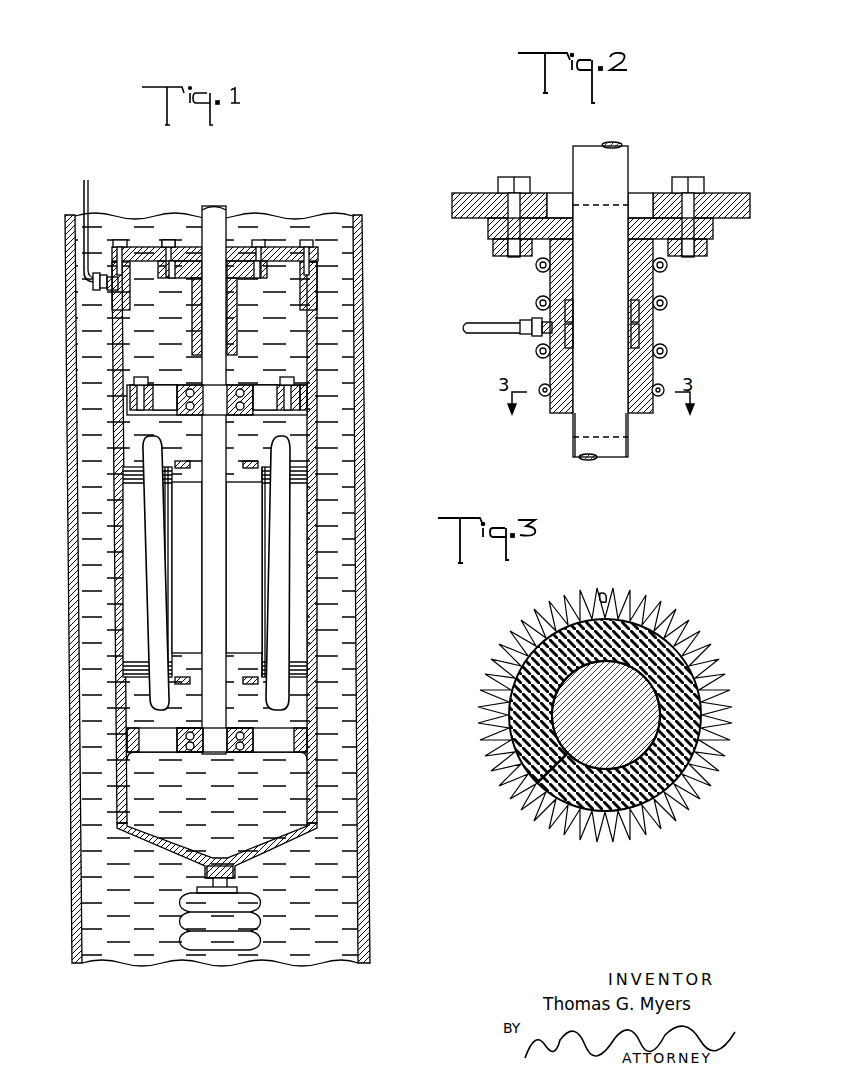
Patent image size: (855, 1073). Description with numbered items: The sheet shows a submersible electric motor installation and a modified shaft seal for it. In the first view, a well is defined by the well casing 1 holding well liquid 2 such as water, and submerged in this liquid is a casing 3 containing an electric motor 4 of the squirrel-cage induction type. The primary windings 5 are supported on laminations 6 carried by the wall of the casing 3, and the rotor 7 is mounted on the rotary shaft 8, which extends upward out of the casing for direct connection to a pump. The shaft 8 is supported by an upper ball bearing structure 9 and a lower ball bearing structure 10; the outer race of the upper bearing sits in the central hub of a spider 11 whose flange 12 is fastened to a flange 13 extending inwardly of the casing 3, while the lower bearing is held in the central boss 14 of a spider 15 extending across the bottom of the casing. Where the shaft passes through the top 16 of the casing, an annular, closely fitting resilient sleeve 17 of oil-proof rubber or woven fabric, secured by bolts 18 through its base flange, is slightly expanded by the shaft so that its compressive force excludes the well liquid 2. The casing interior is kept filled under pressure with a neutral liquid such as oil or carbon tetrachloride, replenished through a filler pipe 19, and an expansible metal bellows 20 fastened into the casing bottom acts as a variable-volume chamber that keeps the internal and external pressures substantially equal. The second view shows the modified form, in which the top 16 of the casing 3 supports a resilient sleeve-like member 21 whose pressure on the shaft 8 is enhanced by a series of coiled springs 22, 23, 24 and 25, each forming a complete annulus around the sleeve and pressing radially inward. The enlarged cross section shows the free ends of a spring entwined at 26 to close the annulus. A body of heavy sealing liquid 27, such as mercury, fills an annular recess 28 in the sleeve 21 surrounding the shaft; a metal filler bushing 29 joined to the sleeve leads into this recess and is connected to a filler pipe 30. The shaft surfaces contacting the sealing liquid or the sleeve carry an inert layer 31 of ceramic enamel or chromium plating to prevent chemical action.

In FIG. 1, the well casing 1 is at (359, 321).
In FIG. 1, the well liquid 2 is at (338, 301).
In FIG. 1, the casing 3 is at (305, 414).
In FIG. 1, the electric motor 4 is at (292, 492).
In FIG. 1, the primary windings 5 is at (285, 543).
In FIG. 1, the laminations 6 is at (300, 586).
In FIG. 1, the rotor 7 is at (180, 575).
In FIG. 1, the rotary shaft 8 is at (211, 608).
In FIG. 2, the rotary shaft 8 is at (625, 148).
In FIG. 3, the rotary shaft 8 is at (555, 750).
In FIG. 1, the upper ball bearing structure 9 is at (240, 385).
In FIG. 1, the lower ball bearing structure 10 is at (235, 752).
In FIG. 1, the spider 11 is at (171, 385).
In FIG. 1, the flange 12 is at (294, 385).
In FIG. 1, the flange 13 is at (312, 400).
In FIG. 1, the central boss 14 is at (183, 752).
In FIG. 1, the spider 15 is at (290, 750).
In FIG. 1, the top 16 is at (297, 247).
In FIG. 2, the top 16 is at (728, 193).
In FIG. 1, the sleeve 17 is at (238, 313).
In FIG. 1, the bolts 18 is at (169, 240).
In FIG. 1, the filler pipe 19 is at (88, 184).
In FIG. 1, the expansible metal bellows 20 is at (238, 950).
In FIG. 2, the resilient sleeve-like member 21 is at (650, 413).
In FIG. 3, the resilient sleeve-like member 21 is at (690, 675).
In FIG. 2, the coiled spring 22 is at (667, 268).
In FIG. 2, the coiled spring 23 is at (667, 306).
In FIG. 2, the coiled spring 24 is at (667, 352).
In FIG. 2, the coiled spring 25 is at (660, 398).
In FIG. 3, the coiled spring 25 is at (668, 612).
In FIG. 3, the entwined spring ends 26 is at (600, 592).
In FIG. 2, the sealing liquid 27 is at (640, 337).
In FIG. 2, the annular recess 28 is at (640, 324).
In FIG. 2, the filler bushing 29 is at (545, 337).
In FIG. 2, the filler pipe 30 is at (486, 320).
In FIG. 2, the layer 31 is at (575, 434).
In FIG. 3, the layer 31 is at (550, 707).